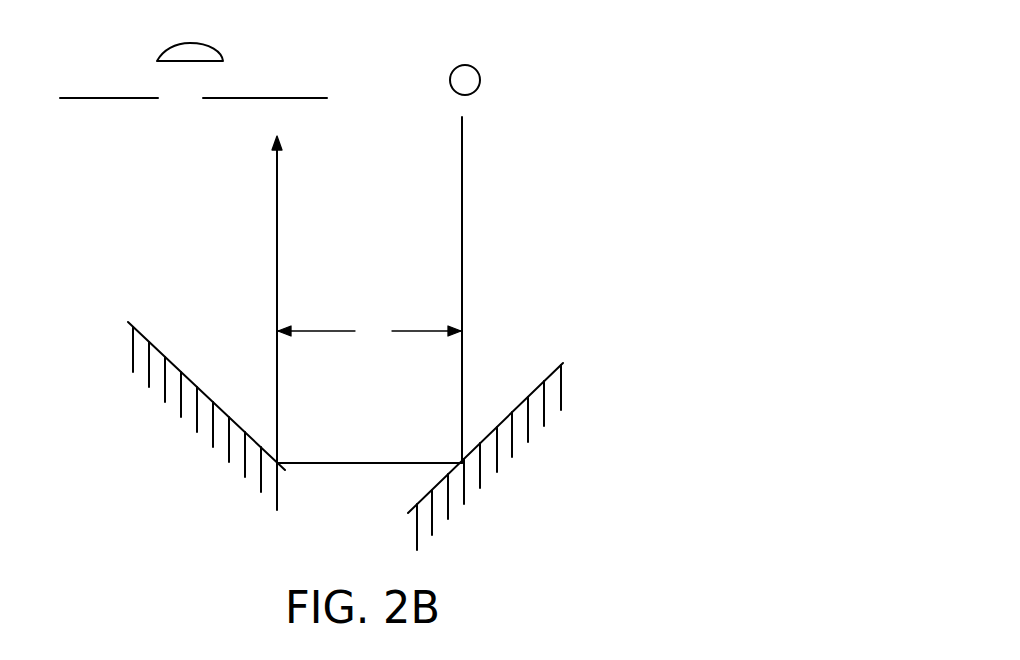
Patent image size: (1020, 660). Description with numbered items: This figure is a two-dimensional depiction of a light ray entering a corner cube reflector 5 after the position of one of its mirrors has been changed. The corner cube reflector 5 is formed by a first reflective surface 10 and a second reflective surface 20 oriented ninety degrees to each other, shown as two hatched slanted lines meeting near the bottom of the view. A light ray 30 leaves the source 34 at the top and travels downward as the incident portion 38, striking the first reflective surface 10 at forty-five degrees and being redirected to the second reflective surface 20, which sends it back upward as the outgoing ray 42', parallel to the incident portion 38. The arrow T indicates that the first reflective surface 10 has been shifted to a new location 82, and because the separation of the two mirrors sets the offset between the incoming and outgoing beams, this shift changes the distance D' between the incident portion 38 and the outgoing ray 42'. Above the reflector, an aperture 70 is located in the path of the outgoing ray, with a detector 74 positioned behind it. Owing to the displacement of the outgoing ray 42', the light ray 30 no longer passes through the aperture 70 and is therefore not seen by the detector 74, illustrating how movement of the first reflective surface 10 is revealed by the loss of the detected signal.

The corner cube reflector 5 is at (655, 165).
The first reflective surface 10 is at (545, 417).
The second reflective surface 20 is at (160, 398).
The light ray 30 is at (538, 166).
The source 34 is at (481, 80).
The incident portion of the light ray 38 is at (463, 143).
The outgoing ray 42' is at (249, 323).
The aperture 70 is at (305, 98).
The detector 74 is at (223, 57).
The location of the first reflective surface 82 is at (620, 360).
The distance D' is at (369, 335).
The shift arrow T is at (560, 365).